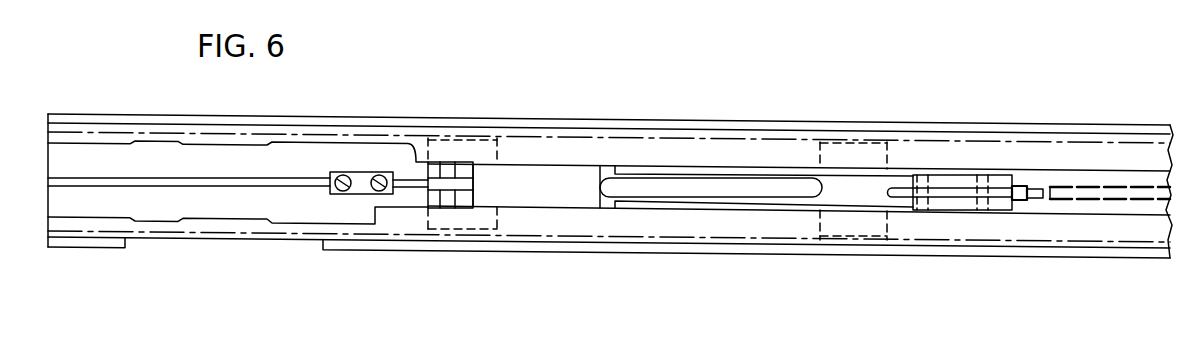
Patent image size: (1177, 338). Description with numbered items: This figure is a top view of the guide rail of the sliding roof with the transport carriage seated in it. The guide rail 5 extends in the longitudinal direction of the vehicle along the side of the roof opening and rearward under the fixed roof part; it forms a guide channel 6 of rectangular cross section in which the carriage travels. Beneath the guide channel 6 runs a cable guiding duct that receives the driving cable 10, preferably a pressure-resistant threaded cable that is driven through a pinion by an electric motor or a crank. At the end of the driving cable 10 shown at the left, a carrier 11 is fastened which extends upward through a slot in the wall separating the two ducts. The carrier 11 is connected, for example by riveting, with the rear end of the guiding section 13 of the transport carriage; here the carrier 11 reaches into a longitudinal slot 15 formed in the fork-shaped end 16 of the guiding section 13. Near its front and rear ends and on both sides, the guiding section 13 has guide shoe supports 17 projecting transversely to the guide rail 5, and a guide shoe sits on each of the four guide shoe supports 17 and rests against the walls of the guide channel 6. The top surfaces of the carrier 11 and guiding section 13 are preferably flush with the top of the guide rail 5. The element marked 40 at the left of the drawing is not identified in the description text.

The guide rail 5 is at (670, 150).
The guide channel 6 is at (1081, 178).
The driving cable 10 is at (1095, 200).
The carrier 11 is at (957, 192).
The guiding section 13 is at (717, 205).
The longitudinal slot 15 is at (968, 188).
The fork-shaped end 16 is at (950, 210).
The guide shoe supports 17 is at (465, 150).
The screw block 40 is at (360, 183).